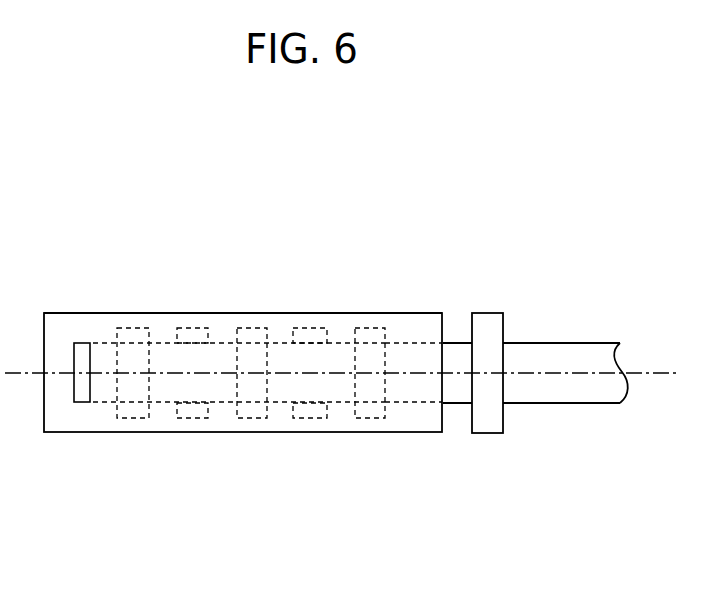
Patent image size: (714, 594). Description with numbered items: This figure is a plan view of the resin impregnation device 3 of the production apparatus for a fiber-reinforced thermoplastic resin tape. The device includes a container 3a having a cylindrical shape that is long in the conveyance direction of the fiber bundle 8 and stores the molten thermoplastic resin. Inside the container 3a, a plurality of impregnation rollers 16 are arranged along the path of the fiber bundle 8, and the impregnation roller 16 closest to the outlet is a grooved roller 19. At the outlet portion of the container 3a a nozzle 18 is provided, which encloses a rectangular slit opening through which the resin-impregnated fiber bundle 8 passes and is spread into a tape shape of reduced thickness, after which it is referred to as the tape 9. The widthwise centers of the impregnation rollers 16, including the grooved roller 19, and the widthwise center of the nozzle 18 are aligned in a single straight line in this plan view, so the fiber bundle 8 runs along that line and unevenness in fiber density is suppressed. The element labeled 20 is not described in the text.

The resin impregnation device 3 is at (176, 456).
The container 3a is at (221, 313).
The fiber bundle 8 is at (344, 316).
The tape 9 is at (562, 343).
The impregnation rollers 16 is at (257, 418).
The nozzle 18 is at (437, 385).
The grooved roller 19 is at (367, 418).
The flange 20 is at (488, 313).